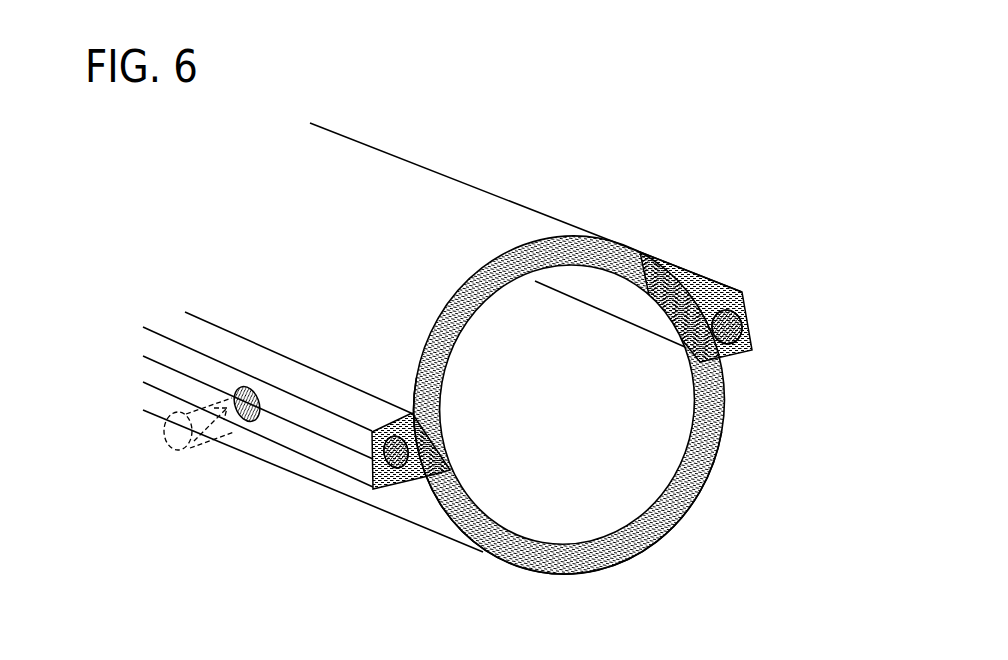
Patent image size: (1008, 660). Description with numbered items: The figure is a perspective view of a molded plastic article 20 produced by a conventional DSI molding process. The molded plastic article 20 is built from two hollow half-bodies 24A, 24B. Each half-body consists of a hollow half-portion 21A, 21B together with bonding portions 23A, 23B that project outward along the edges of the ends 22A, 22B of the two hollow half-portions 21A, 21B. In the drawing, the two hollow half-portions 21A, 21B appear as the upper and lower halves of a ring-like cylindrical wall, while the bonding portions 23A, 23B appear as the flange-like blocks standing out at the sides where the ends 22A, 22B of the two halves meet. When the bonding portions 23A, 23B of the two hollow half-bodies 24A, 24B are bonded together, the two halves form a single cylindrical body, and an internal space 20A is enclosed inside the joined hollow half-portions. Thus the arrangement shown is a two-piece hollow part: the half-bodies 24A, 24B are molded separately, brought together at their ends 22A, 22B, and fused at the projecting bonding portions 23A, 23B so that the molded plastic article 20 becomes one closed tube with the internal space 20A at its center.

The molded plastic article 20 is at (512, 165).
The internal space 20A is at (571, 335).
The hollow half-portion 21A is at (555, 243).
The hollow half-portion 21B is at (650, 537).
The end 22A is at (643, 328).
The end 22B is at (562, 412).
The bonding portion 23A is at (323, 390).
The bonding portion 23B is at (388, 488).
The hollow half-body 24A is at (474, 264).
The hollow half-body 24B is at (602, 588).